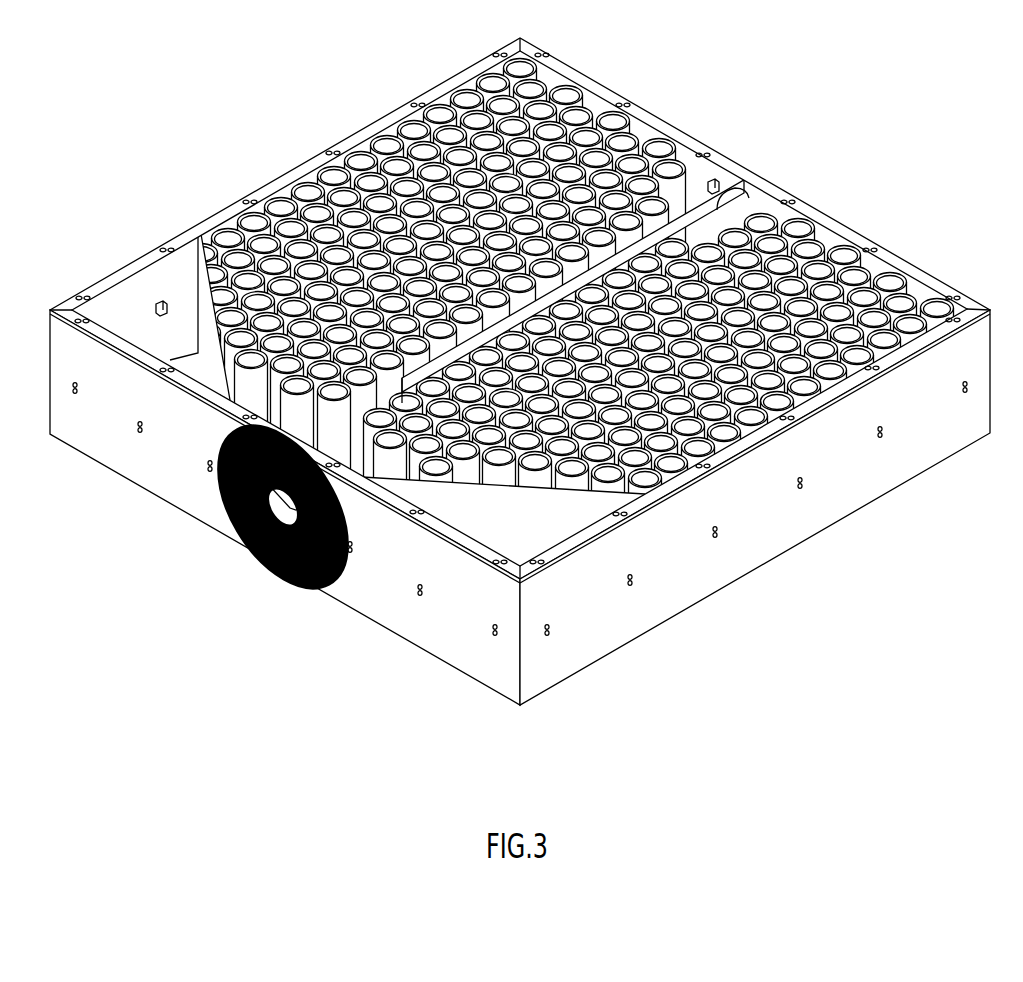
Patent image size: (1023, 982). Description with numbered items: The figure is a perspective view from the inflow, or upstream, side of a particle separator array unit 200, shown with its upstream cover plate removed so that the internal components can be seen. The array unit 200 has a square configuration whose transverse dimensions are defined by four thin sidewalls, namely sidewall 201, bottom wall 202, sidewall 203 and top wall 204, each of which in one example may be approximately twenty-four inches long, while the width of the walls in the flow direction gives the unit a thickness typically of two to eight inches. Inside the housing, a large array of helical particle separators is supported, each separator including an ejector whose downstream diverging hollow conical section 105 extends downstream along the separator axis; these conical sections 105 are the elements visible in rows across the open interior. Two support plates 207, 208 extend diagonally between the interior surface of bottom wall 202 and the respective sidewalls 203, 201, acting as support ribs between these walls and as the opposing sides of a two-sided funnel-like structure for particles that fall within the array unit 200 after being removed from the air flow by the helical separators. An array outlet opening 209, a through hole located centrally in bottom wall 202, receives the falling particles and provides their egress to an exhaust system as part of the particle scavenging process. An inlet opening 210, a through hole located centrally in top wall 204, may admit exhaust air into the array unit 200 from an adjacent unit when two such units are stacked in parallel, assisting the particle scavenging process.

The particle separator array unit 200 is at (520, 361).
The sidewall 201 is at (940, 440).
The bottom wall 202 is at (410, 628).
The sidewall 203 is at (296, 176).
The top wall 204 is at (691, 173).
The support plate 207 is at (203, 297).
The support plate 208 is at (540, 523).
The array outlet opening 209 is at (282, 532).
The inlet opening 210 is at (719, 209).
The conical section 105 is at (283, 513).